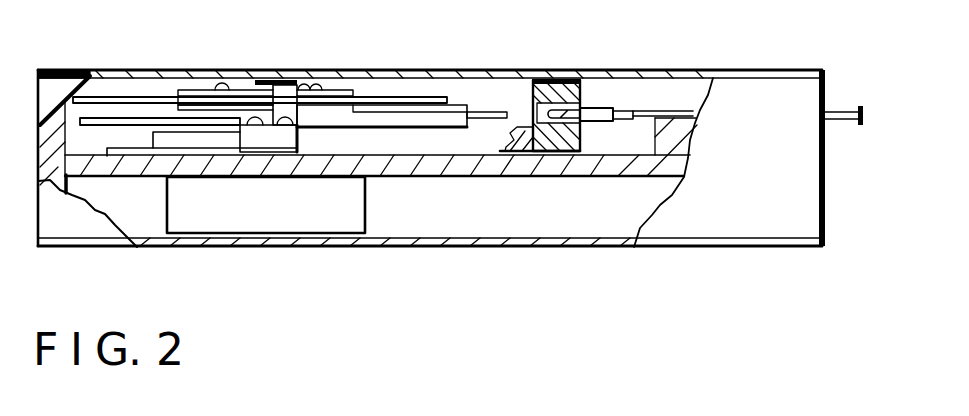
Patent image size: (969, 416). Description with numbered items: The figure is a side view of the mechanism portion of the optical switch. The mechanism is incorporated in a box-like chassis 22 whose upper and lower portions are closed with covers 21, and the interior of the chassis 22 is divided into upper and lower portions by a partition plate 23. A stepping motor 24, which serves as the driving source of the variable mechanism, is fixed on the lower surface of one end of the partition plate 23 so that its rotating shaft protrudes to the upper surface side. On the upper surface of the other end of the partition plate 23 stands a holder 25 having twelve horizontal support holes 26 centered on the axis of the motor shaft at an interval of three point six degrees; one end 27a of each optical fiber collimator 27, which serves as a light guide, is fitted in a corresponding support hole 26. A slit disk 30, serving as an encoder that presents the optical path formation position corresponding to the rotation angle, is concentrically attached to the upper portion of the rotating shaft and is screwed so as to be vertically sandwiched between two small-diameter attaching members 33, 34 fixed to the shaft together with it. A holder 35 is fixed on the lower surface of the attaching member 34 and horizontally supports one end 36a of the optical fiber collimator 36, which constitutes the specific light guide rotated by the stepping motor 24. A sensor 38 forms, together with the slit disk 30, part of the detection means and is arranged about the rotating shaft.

The cover 21 is at (750, 69).
The chassis 22 is at (830, 225).
The partition plate 23 is at (567, 167).
The stepping motor 24 is at (263, 222).
The holder 25 is at (553, 86).
The support hole 26 is at (533, 108).
The optical fiber collimator 27 is at (625, 108).
The one end of optical fiber collimator 27a is at (557, 108).
The slit disk 30 is at (118, 97).
The attaching member 33 is at (197, 90).
The attaching member 34 is at (182, 111).
The holder 35 is at (417, 117).
The optical fiber collimator 36 is at (120, 127).
The one end of optical fiber collimator 36a is at (482, 118).
The sensor 38 is at (290, 110).